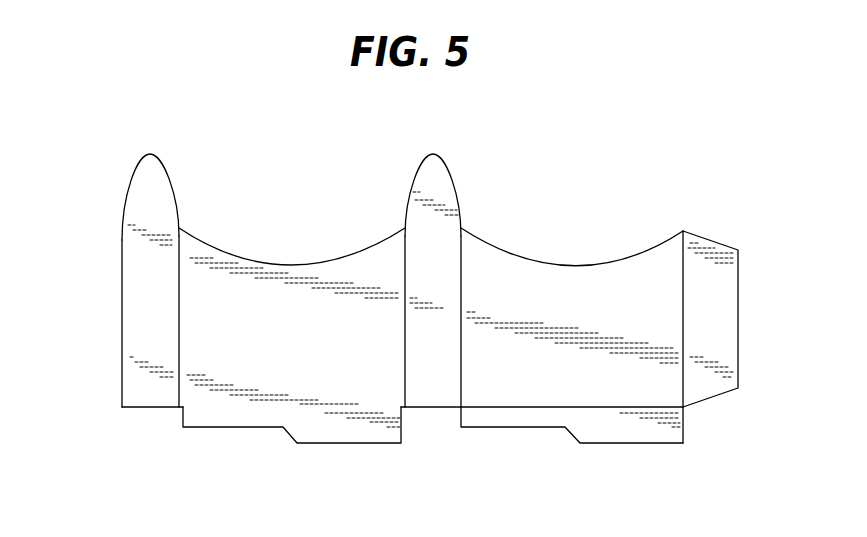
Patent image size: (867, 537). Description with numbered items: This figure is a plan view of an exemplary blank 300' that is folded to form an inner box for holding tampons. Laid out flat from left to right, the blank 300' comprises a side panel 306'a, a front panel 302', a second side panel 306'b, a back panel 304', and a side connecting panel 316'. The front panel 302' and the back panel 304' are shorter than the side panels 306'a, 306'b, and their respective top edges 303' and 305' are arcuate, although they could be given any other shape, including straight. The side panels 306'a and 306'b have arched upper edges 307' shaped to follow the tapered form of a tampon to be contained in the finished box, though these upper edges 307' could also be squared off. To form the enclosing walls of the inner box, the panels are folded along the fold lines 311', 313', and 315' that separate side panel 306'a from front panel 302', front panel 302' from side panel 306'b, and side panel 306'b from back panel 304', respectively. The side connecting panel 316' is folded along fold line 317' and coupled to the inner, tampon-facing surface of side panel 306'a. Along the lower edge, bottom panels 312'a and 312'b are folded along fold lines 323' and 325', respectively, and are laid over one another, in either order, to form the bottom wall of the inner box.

The blank 300' is at (413, 275).
The front panel 302' is at (295, 261).
The top edge 303' is at (292, 222).
The back panel 304' is at (662, 337).
The top edge 305' is at (572, 239).
The side panel 306'a is at (97, 321).
The side panel 306'b is at (484, 303).
The arched upper edge 307' is at (304, 181).
The fold line 311' is at (270, 374).
The bottom panel 312'a is at (366, 465).
The bottom panel 312'b is at (687, 452).
The fold line 313' is at (375, 323).
The fold line 315' is at (572, 359).
The side connecting panel 316' is at (745, 325).
The fold line 317' is at (753, 360).
The fold line 323' is at (288, 449).
The fold line 325' is at (572, 459).